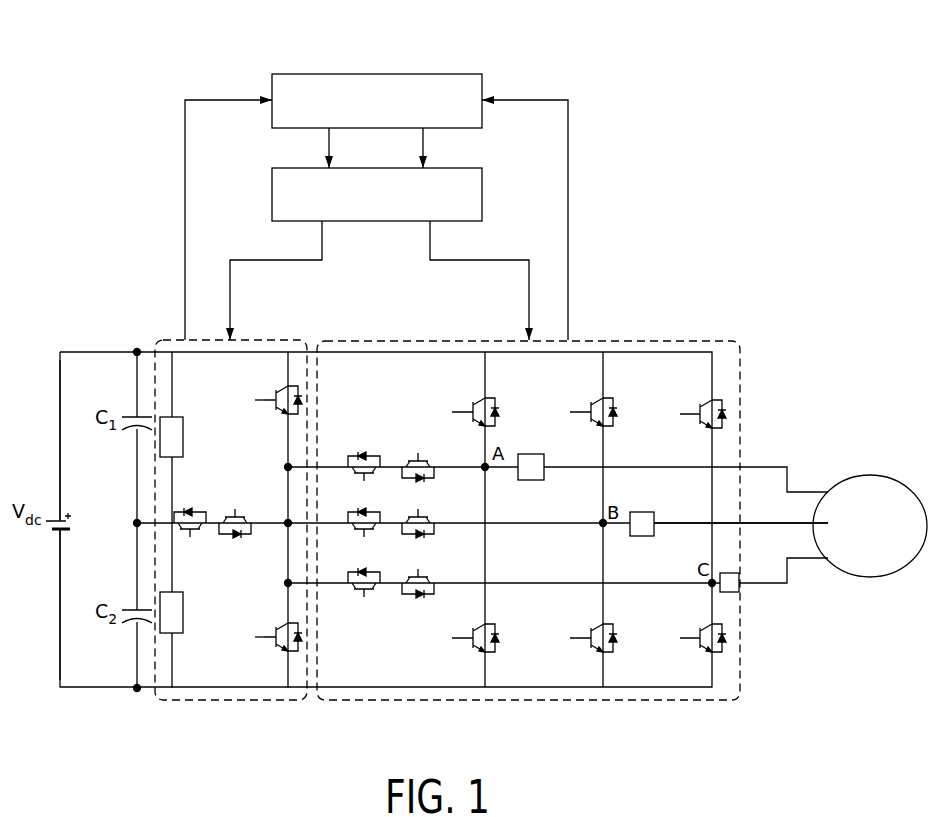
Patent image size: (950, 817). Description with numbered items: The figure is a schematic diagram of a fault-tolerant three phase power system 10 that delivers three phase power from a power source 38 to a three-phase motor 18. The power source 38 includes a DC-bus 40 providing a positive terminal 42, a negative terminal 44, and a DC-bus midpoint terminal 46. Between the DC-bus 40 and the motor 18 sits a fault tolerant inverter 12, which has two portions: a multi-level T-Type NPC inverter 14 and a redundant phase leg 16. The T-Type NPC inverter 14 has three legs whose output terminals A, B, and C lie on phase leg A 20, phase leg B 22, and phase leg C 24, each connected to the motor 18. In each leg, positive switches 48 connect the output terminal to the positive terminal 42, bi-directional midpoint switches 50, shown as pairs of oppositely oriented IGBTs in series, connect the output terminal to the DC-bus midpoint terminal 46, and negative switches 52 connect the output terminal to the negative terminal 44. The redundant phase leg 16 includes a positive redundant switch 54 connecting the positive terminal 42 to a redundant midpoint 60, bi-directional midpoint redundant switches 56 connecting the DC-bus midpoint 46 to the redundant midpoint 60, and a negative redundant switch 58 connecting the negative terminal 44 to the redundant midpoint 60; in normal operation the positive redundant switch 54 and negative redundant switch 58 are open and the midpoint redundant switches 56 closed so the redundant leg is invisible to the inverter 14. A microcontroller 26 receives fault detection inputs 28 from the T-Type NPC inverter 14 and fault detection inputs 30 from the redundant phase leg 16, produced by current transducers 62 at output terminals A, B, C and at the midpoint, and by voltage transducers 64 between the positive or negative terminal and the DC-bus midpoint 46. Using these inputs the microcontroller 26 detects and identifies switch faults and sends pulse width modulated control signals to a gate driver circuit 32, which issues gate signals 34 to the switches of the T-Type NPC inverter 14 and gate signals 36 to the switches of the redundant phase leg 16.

The fault-tolerant three phase power system 10 is at (622, 250).
The fault tolerant inverter 12 is at (756, 343).
The multi-level T-Type NPC inverter 14 is at (665, 340).
The redundant phase leg 16 is at (178, 338).
The 3-phase motor 18 is at (870, 476).
The phase leg A 20 is at (785, 466).
The phase leg B 22 is at (810, 492).
The phase leg C 24 is at (783, 586).
The microcontroller 26 is at (448, 74).
The fault detection inputs 28 is at (568, 167).
The fault detection inputs 30 is at (185, 172).
The gate driver circuit 32 is at (482, 190).
The gate signals 34 is at (505, 260).
The gate signals 36 is at (258, 260).
The power source 38 is at (57, 518).
The DC-bus 40 is at (88, 463).
The positive terminal 42 is at (137, 352).
The negative terminal 44 is at (137, 690).
The DC-bus midpoint terminal 46 is at (137, 523).
The positive switches 48 is at (496, 378).
The bi-directional midpoint switches 50 is at (388, 458).
The negative switches 52 is at (476, 655).
The positive redundant switch 54 is at (297, 375).
The bi-directional midpoint redundant switches 56 is at (218, 511).
The negative redundant switch 58 is at (281, 652).
The redundant midpoint 60 is at (287, 521).
The current transducers 62 is at (531, 481).
The voltage transducers 64 is at (184, 425).